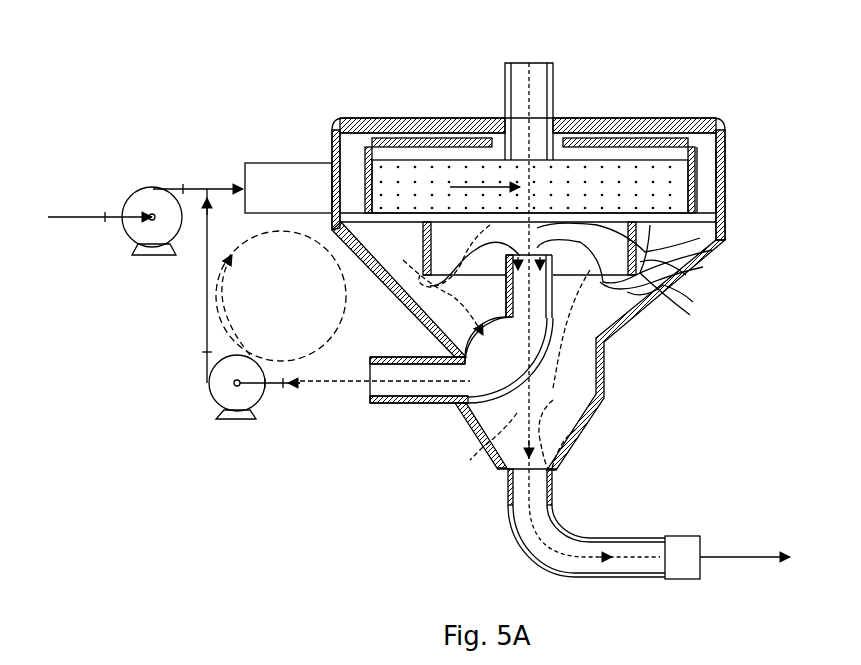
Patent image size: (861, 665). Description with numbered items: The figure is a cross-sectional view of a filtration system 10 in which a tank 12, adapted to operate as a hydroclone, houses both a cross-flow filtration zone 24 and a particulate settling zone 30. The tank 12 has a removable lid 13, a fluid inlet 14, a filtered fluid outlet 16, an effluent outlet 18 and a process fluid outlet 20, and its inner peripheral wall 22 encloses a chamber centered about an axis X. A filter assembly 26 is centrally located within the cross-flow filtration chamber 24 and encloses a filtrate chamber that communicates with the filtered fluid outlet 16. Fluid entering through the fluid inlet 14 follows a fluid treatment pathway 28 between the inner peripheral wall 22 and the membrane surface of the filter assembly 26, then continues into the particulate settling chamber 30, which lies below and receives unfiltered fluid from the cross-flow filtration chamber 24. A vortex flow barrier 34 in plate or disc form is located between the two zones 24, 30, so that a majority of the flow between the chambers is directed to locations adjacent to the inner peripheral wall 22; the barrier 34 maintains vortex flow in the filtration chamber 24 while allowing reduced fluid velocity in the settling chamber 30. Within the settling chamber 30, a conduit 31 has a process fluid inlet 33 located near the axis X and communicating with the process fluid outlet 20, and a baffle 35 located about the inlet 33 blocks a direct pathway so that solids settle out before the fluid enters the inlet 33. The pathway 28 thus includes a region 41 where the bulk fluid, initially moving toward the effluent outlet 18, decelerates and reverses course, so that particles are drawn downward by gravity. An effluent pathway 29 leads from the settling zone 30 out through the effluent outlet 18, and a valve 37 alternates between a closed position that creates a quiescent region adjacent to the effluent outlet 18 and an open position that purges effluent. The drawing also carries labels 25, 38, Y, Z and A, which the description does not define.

The system 10 is at (675, 287).
The tank 12 is at (620, 352).
The removable lid 13 is at (398, 127).
The fluid inlet 14 is at (270, 176).
The filtered fluid outlet 16 is at (554, 90).
The effluent outlet 18 is at (565, 507).
The process fluid outlet 20 is at (395, 404).
The inner peripheral wall 22 is at (630, 320).
The cross-flow filtration zone 24 is at (700, 185).
The inlet chamber 25 is at (363, 184).
The filter assembly 26 is at (630, 157).
The fluid treatment pathway 28 is at (706, 172).
The effluent pathway 29 is at (565, 383).
The particulate settling zone 30 is at (712, 250).
The conduit 31 is at (490, 440).
The process fluid inlet 33 is at (703, 267).
The vortex flow barrier 34 is at (690, 232).
The baffle 35 is at (693, 300).
The valve 37 is at (680, 580).
The lower funnel wall 38 is at (574, 438).
The region 41 is at (690, 312).
The axis X is at (528, 100).
The blower Y is at (128, 245).
The pump Z is at (210, 398).
The recirculation loop A is at (346, 322).